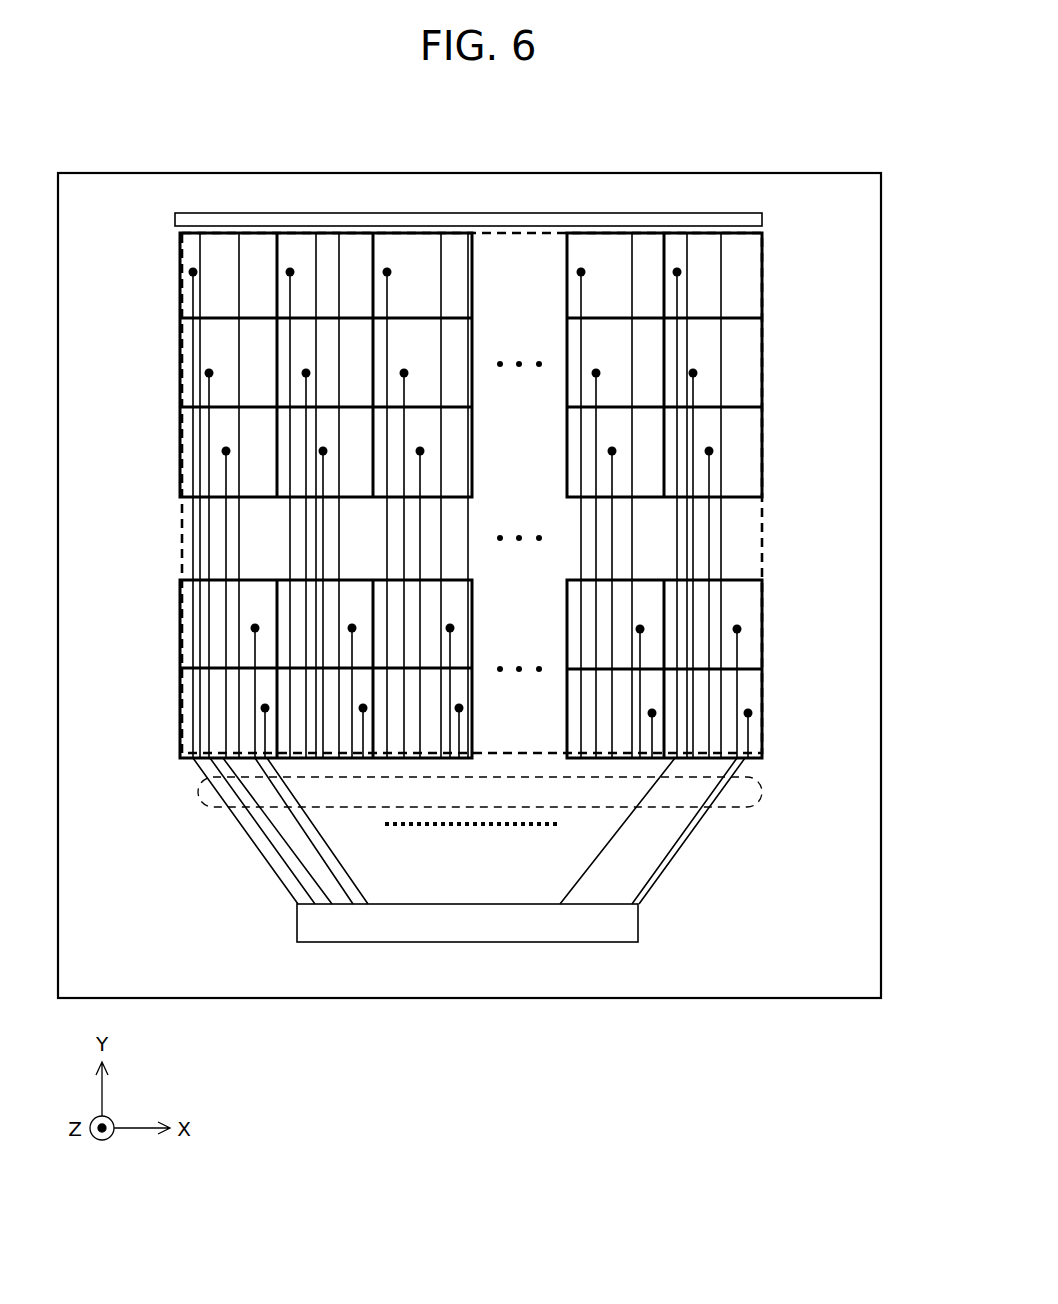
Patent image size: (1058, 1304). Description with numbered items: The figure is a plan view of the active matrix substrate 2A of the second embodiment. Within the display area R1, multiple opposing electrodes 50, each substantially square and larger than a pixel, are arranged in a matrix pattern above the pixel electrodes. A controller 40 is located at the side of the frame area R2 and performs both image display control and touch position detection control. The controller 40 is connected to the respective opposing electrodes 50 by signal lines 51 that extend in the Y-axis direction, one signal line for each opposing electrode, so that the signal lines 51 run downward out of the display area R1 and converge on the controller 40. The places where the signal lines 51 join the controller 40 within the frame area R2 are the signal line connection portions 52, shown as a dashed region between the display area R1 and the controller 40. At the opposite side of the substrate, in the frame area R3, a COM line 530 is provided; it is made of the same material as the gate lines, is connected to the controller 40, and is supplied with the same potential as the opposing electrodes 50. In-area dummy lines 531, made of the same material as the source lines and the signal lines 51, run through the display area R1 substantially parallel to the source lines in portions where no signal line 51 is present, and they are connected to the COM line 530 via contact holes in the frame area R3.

The active matrix substrate 2A is at (881, 173).
The COM line 530 is at (551, 213).
The in-area dummy lines 531 is at (721, 537).
The opposing electrodes 50 is at (743, 433).
The signal lines 51 is at (740, 643).
The signal line connection portions 52 is at (762, 792).
The controller 40 is at (638, 936).
The display area R1 is at (766, 236).
The frame area R2 is at (156, 763).
The frame area R3 is at (148, 177).